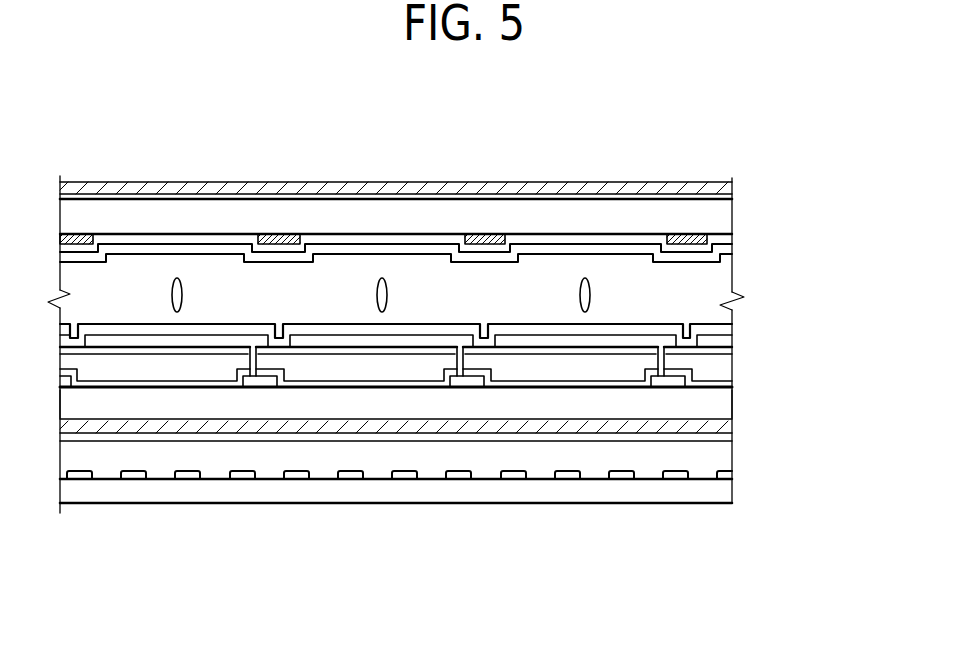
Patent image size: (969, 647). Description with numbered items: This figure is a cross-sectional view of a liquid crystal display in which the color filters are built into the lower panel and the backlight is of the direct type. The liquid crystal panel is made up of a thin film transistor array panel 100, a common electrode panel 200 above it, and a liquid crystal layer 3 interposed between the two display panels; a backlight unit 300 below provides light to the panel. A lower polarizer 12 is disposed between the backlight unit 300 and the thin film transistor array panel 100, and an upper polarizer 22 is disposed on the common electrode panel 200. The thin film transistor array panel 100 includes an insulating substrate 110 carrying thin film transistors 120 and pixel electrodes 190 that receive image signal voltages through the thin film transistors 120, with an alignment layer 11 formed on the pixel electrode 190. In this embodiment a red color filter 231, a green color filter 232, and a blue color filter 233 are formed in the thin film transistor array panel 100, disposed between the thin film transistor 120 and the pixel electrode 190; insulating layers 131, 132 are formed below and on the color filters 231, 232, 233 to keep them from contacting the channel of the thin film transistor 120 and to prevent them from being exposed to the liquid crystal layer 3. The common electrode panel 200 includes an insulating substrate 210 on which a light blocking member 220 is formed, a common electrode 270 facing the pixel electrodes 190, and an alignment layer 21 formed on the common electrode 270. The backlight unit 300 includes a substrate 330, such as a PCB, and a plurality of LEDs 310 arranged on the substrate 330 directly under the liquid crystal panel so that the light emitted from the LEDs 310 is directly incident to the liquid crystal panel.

The common electrode panel 200 is at (467, 199).
The insulating substrate 210 is at (720, 218).
The upper polarizer 22 is at (624, 192).
The light blocking member 220 is at (684, 233).
The alignment layer 21 is at (727, 249).
The common electrode 270 is at (386, 238).
The liquid crystal layer 3 is at (509, 304).
The pixel electrode 190 is at (640, 342).
The thin film transistor array panel 100 is at (464, 434).
The alignment layer 11 is at (727, 329).
The insulating layer 131 is at (108, 349).
The insulating layer 132 is at (156, 389).
The red color filter 231 is at (215, 368).
The green color filter 232 is at (313, 368).
The blue color filter 233 is at (532, 368).
The thin film transistor 120 is at (667, 388).
The insulating substrate 110 is at (725, 403).
The lower polarizer 12 is at (728, 430).
The backlight unit 300 is at (396, 537).
The LED 310 is at (455, 481).
The substrate 330 is at (470, 553).